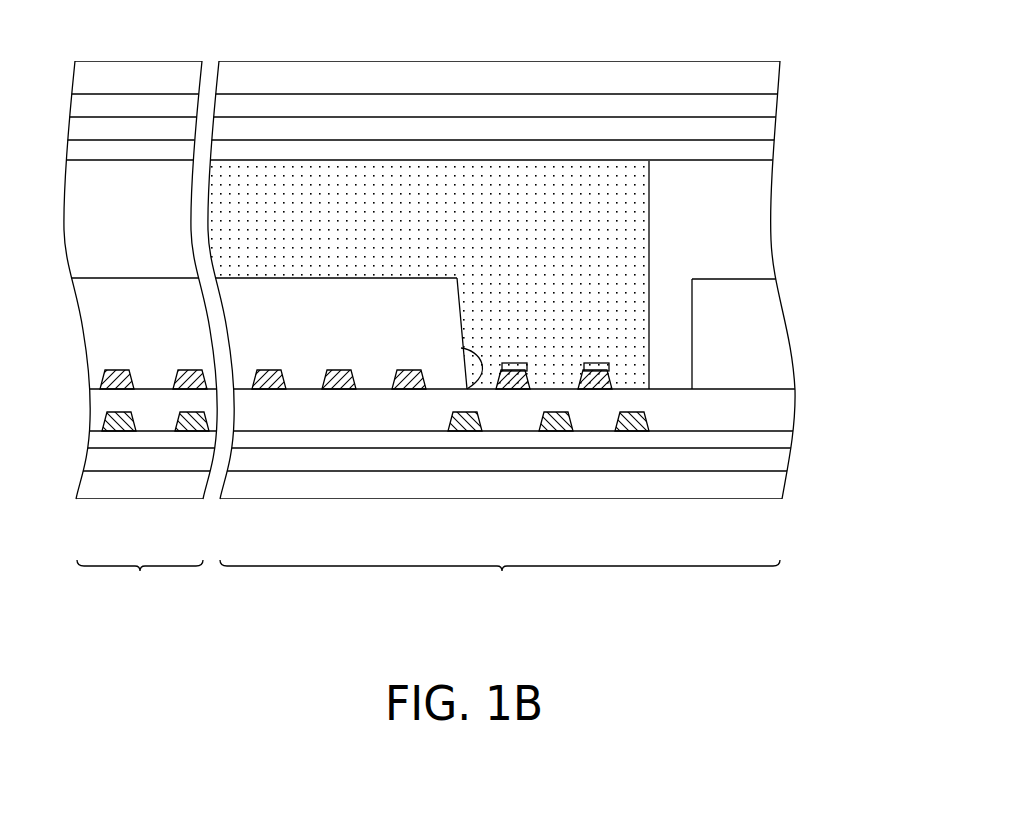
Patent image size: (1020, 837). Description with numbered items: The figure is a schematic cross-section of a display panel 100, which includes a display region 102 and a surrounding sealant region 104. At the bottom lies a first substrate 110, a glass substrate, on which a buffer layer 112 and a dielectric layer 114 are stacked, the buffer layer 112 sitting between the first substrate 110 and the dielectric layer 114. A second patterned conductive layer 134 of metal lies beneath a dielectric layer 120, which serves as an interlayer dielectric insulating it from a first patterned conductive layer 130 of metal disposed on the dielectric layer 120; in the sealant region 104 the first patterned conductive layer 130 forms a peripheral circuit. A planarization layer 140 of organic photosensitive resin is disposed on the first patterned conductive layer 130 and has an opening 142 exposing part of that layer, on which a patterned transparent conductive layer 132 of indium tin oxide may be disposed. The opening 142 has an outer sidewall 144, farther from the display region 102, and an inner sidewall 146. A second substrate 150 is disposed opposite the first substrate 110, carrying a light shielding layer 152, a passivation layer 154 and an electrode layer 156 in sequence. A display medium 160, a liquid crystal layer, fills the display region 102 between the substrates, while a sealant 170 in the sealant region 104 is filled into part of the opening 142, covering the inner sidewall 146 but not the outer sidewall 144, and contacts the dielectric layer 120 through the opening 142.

The display panel 100 is at (738, 622).
The display region 102 is at (140, 584).
The sealant region 104 is at (500, 584).
The first substrate 110 is at (762, 489).
The buffer layer 112 is at (762, 463).
The dielectric layer 114 is at (762, 438).
The dielectric layer 120 is at (762, 411).
The first patterned conductive layer 130 is at (598, 378).
The patterned transparent conductive layer 132 is at (585, 372).
The second patterned conductive layer 134 is at (466, 423).
The planarization layer 140 is at (762, 342).
The opening 142 is at (676, 277).
The sidewall 144 is at (693, 306).
The sidewall 146 is at (470, 382).
The second substrate 150 is at (762, 78).
The light shielding layer 152 is at (762, 106).
The passivation layer 154 is at (762, 131).
The electrode layer 156 is at (762, 156).
The display medium 160 is at (129, 190).
The sealant 170 is at (637, 202).